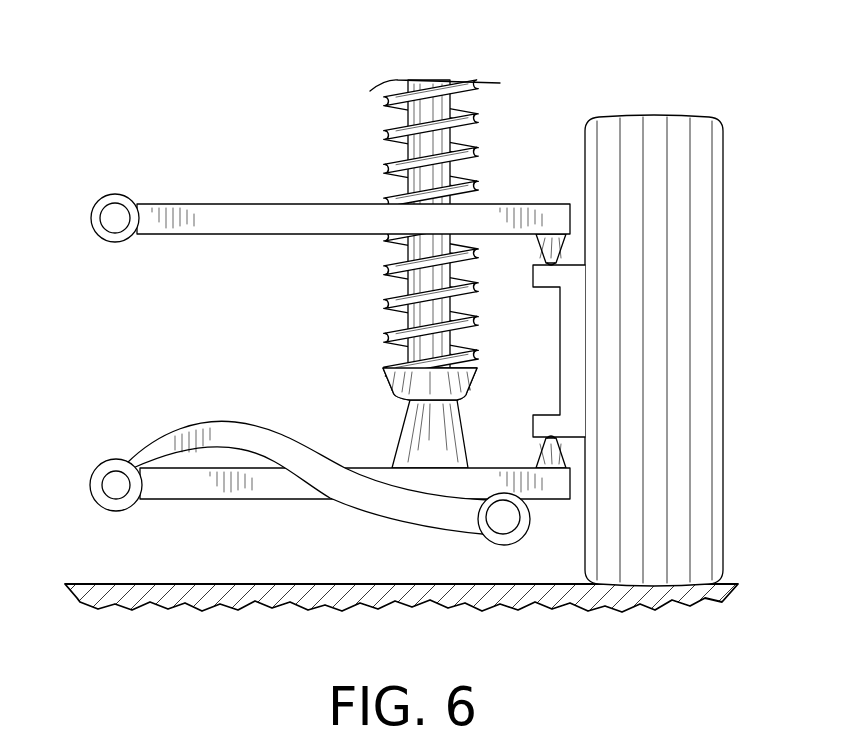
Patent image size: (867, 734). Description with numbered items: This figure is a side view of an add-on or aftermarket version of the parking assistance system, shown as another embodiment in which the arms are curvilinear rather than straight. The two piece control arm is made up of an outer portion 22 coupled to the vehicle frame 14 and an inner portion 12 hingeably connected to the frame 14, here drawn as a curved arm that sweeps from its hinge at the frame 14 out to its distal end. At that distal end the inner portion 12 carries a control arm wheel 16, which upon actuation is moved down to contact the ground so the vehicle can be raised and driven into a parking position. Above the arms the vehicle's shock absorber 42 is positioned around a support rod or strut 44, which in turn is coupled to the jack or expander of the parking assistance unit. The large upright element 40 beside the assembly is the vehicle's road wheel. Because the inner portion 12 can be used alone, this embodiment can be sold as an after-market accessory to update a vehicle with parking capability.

The inner portion of control arm 12 is at (228, 430).
The vehicle frame 14 is at (90, 482).
The control arm wheel 16 is at (503, 547).
The outer portion of control arm 22 is at (194, 488).
The wheel 40 is at (700, 120).
The shock absorber 42 is at (381, 133).
The support rod or strut 44 is at (402, 151).